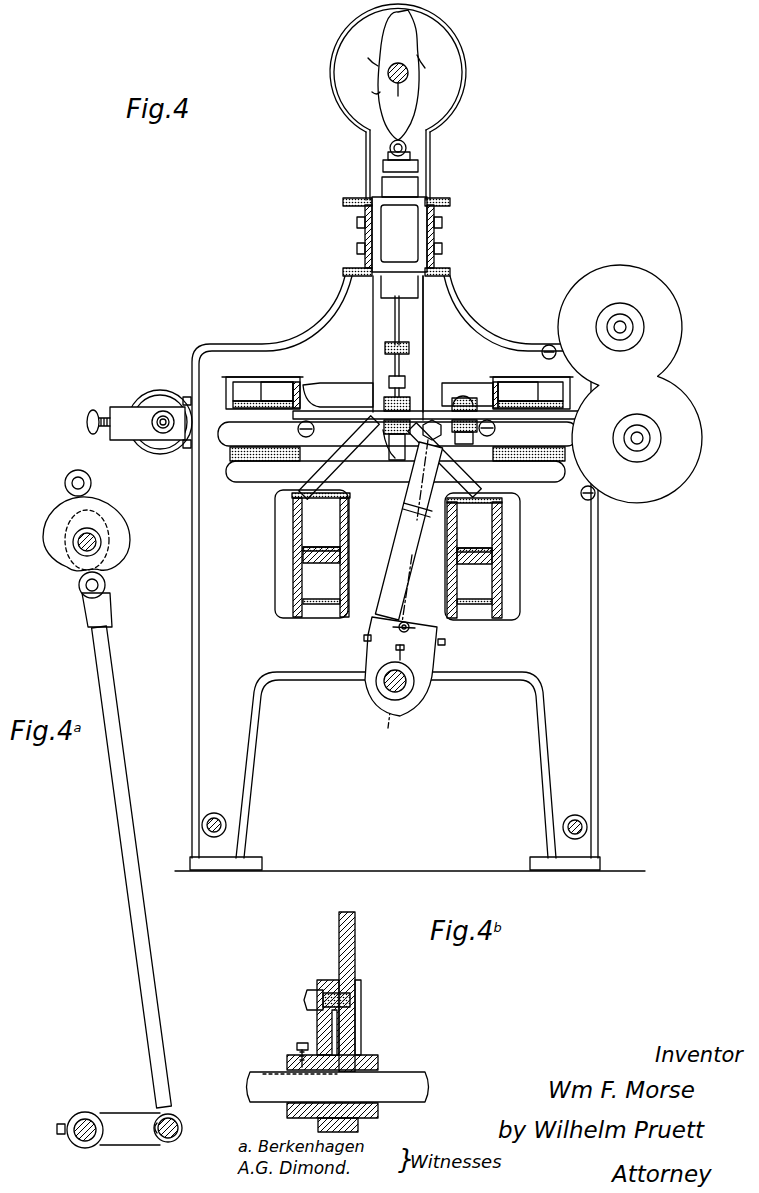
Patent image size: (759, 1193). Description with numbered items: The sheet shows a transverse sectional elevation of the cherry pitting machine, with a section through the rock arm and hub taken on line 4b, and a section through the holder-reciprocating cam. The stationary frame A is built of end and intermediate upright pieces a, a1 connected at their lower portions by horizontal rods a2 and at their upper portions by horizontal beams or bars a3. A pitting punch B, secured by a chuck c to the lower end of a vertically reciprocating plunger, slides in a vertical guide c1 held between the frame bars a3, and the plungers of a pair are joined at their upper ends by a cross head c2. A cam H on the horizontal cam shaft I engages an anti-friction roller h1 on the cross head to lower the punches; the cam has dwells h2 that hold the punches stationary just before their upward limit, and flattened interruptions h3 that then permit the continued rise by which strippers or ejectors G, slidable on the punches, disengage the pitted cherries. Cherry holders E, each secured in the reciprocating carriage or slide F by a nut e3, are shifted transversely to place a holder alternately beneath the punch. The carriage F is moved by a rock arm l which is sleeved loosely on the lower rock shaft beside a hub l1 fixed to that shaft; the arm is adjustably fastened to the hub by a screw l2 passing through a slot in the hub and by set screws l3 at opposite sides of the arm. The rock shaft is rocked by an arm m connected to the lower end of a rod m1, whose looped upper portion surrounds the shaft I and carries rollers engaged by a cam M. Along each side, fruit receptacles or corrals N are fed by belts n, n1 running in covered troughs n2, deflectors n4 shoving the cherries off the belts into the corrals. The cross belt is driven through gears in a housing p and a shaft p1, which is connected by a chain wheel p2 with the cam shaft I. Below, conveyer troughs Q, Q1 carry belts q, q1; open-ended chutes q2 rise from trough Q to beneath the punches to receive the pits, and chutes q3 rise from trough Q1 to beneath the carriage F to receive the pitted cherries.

In FIG. 4, the upright pieces a is at (410, 573).
In FIG. 4, the stationary frame A is at (434, 744).
In FIG. 4, the intermediate upright pieces a1 is at (424, 320).
In FIG. 4, the horizontal rods a2 is at (226, 826).
In FIG. 4, the horizontal beams or bars a3 is at (357, 240).
In FIG. 4, the pitting punches B is at (410, 356).
In FIG. 4, the chucks c is at (394, 314).
In FIG. 4, the vertical guides or bearings c1 is at (396, 308).
In FIG. 4, the cross head c2 is at (413, 166).
In FIG. 4, the cherry holders E is at (411, 402).
In FIG. 4, the nut e3 is at (382, 452).
In FIG. 4, the reciprocating carriage or slide F is at (382, 424).
In FIG. 4, the strippers or ejectors G is at (389, 378).
In FIG. 4, the cam H is at (398, 72).
In FIG. 4, the anti-friction roller h1 is at (412, 105).
In FIG. 4, the dwells h2 is at (372, 92).
In FIG. 4, the flattened interruptions h3 is at (368, 58).
In FIG. 4B, the cam shaft I is at (338, 1087).
In FIG. 4, the rock arm l is at (408, 531).
In FIG. 4B, the rock arm l is at (356, 938).
In FIG. 4, the hub l1 is at (401, 666).
In FIG. 4B, the hub l1 is at (317, 1024).
In FIG. 4, the screw l2 is at (400, 624).
In FIG. 4B, the screw l2 is at (322, 996).
In FIG. 4, the set screws l3 is at (364, 638).
In FIG. 4A, the cam M is at (115, 518).
In FIG. 4A, the arm m is at (119, 1130).
In FIG. 4A, the rod m1 is at (122, 864).
In FIG. 4, the fruit receptacles or corrals N is at (470, 372).
In FIG. 4, the feed belt or conveyer n is at (545, 405).
In FIG. 4, the feed belt or conveyer n1 is at (255, 398).
In FIG. 4, the covered trough or box n2 is at (299, 383).
In FIG. 4, the deflectors n4 is at (240, 384).
In FIG. 4, the housing p is at (630, 384).
In FIG. 4, the shaft p1 is at (631, 319).
In FIG. 4, the chain wheel p2 is at (626, 332).
In FIG. 4, the conveyer trough Q is at (495, 526).
In FIG. 4, the conveyer trough Q1 is at (292, 530).
In FIG. 4, the conveyer or belt q is at (470, 602).
In FIG. 4, the conveyer or belt q1 is at (321, 598).
In FIG. 4, the open-ended chutes q2 is at (455, 470).
In FIG. 4, the open-ended chutes q3 is at (339, 457).
In FIG. 4, the section line 4b is at (408, 598).